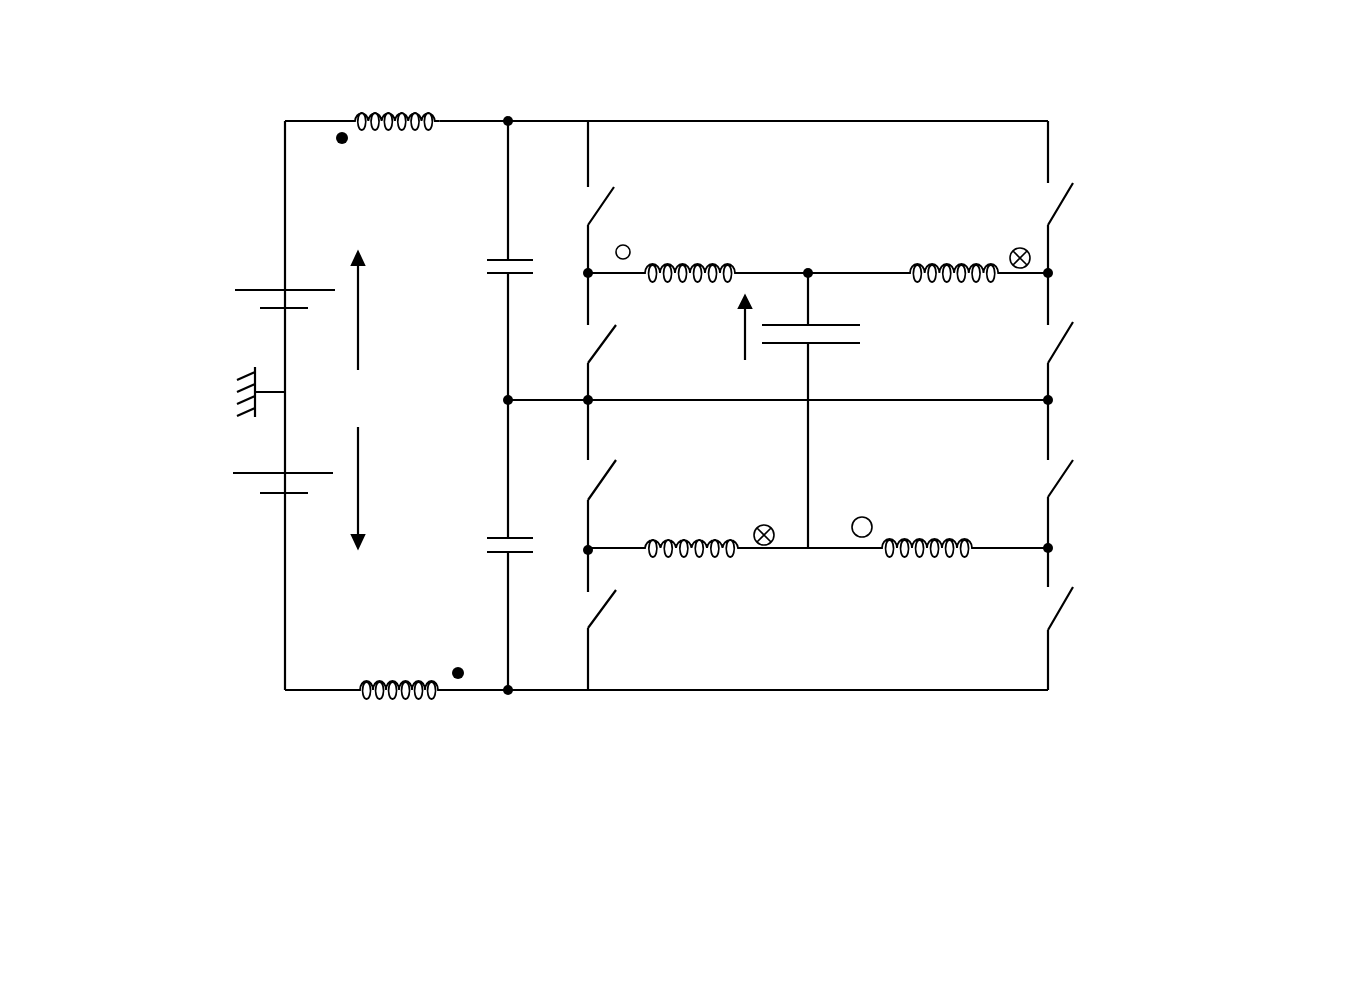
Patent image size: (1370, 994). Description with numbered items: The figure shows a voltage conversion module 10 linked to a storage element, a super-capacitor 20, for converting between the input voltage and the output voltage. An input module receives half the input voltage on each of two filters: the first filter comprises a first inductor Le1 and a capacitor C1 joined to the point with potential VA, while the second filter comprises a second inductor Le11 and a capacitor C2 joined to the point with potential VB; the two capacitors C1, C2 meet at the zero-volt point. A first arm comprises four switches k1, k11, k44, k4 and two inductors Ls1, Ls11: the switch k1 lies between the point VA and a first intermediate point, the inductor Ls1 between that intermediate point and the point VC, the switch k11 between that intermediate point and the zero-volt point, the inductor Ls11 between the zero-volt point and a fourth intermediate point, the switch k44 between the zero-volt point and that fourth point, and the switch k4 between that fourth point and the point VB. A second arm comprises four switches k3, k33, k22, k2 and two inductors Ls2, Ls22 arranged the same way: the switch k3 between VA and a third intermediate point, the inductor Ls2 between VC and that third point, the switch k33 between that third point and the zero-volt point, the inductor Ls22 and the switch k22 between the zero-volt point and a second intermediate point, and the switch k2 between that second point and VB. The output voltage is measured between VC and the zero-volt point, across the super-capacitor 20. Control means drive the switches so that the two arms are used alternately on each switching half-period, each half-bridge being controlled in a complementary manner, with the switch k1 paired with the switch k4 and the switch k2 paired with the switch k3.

The conversion module 10 is at (1190, 126).
The super-capacitor 20 is at (838, 353).
The capacitor C1 is at (485, 266).
The capacitor C2 is at (485, 549).
The first inductor Le1 is at (395, 149).
The input inductor Le11 is at (391, 671).
The inductor Ls1 is at (690, 251).
The inductor Ls2 is at (951, 251).
The inductor Ls11 is at (927, 574).
The inductor Ls22 is at (691, 574).
The switch k1 is at (618, 197).
The switch k11 is at (623, 336).
The switch k22 is at (623, 475).
The switch k2 is at (608, 620).
The switch k3 is at (1072, 197).
The switch k33 is at (1077, 336).
The switch k44 is at (1077, 474).
The switch k4 is at (1072, 619).